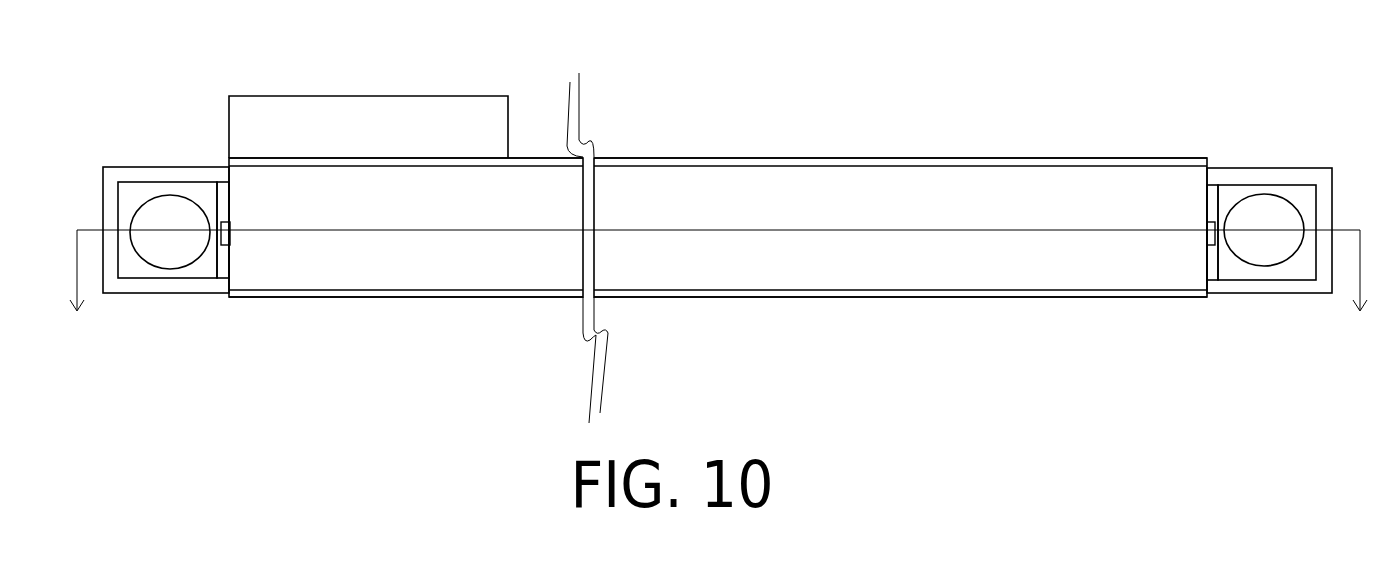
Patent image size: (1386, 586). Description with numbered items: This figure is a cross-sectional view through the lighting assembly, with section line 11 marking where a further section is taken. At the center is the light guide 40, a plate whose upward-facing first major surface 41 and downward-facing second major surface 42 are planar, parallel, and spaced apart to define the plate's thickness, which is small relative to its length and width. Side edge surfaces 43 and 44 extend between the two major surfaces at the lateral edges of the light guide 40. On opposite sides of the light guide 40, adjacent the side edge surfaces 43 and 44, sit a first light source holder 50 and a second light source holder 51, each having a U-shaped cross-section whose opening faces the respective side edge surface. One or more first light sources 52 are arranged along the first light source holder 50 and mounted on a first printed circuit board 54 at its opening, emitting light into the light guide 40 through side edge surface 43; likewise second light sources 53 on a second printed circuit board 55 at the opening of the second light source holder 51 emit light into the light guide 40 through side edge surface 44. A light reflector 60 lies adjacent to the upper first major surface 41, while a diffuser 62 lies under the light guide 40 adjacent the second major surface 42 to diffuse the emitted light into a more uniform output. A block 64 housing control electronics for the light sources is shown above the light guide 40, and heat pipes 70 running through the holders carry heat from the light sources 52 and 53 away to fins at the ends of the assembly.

The section line 11- 11 is at (718, 288).
The light guide 40 is at (720, 257).
The first major surface 41 is at (694, 170).
The second major surface 42 is at (827, 290).
The side edge surface 43 is at (1200, 263).
The side edge surface 44 is at (229, 260).
The first light source holder 50 is at (1280, 175).
The second light source holder 51 is at (135, 173).
The first light source 52 is at (1206, 233).
The second light source 53 is at (232, 232).
The first printed circuit board 54 is at (1218, 203).
The second printed circuit board 55 is at (212, 202).
The light reflector 60 is at (670, 162).
The diffuser 62 is at (885, 300).
The block 64 is at (358, 115).
The heat pipe 70 is at (178, 245).